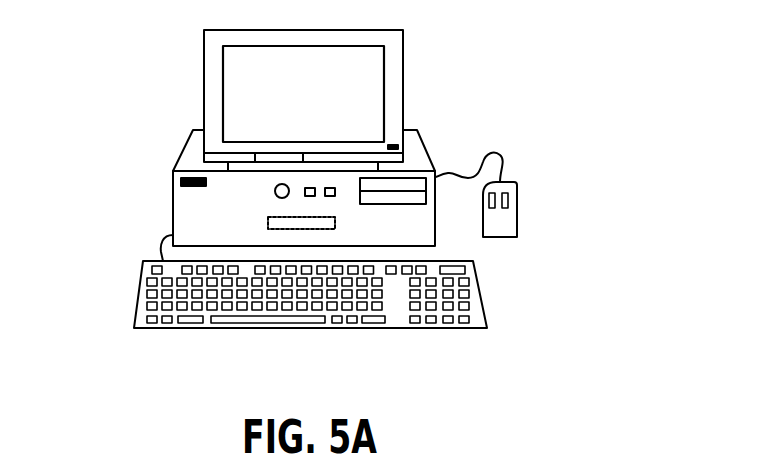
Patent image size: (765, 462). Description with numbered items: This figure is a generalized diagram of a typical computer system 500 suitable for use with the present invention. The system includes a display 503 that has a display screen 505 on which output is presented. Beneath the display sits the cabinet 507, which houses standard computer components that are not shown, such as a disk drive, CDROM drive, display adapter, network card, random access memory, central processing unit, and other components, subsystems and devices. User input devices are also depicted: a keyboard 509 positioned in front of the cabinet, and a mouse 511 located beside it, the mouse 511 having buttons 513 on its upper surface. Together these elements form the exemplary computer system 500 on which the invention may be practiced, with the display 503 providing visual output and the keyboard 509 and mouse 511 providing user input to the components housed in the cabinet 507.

The computer system 500 is at (406, 213).
The display 503 is at (354, 100).
The display screen 505 is at (377, 60).
The cabinet 507 is at (413, 148).
The keyboard 509 is at (202, 328).
The mouse 511 is at (523, 207).
The buttons 513 is at (512, 190).